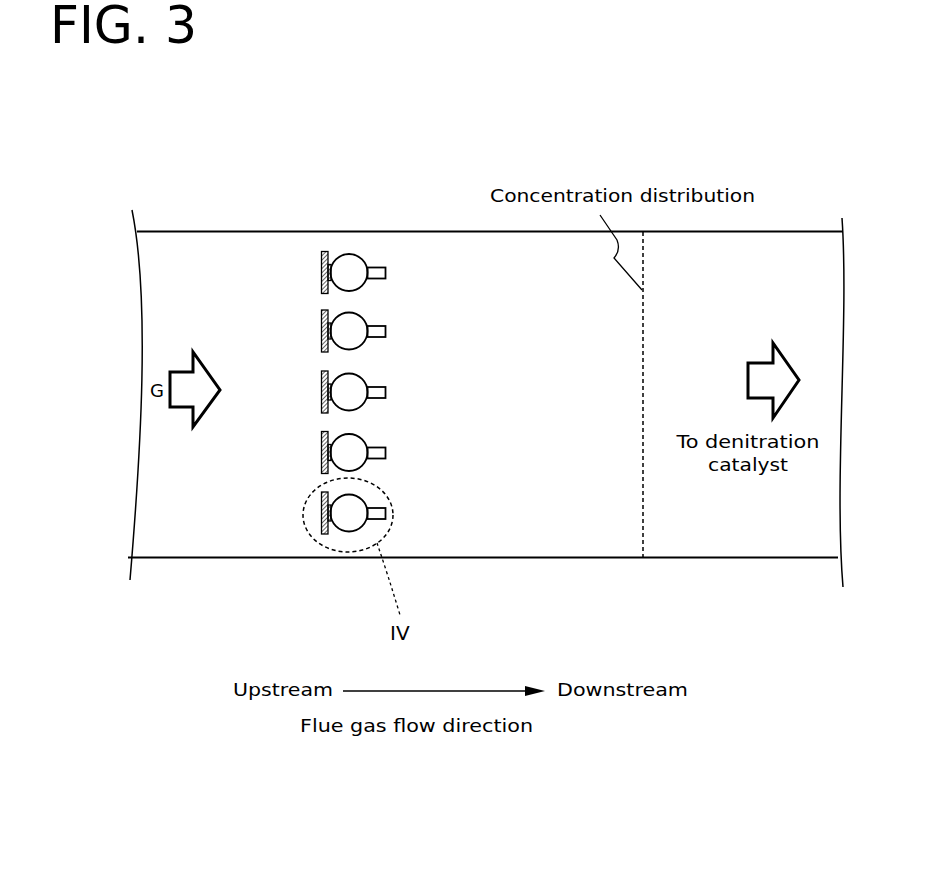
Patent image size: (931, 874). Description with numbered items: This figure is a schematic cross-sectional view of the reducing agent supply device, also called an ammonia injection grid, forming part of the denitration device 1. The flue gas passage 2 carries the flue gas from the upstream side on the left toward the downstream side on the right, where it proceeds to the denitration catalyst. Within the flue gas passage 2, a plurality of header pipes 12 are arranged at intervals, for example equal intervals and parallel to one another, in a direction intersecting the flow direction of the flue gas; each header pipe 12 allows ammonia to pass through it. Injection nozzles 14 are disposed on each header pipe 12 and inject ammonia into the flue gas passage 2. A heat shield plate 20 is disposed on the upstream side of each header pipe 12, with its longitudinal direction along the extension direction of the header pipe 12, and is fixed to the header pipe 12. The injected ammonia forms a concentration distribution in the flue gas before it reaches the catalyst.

The denitration device 1 is at (489, 140).
The flue gas passage 2 is at (555, 426).
The header pipe 12 is at (349, 264).
The injection nozzle 14 is at (386, 279).
The heat shield plate 20 is at (321, 274).